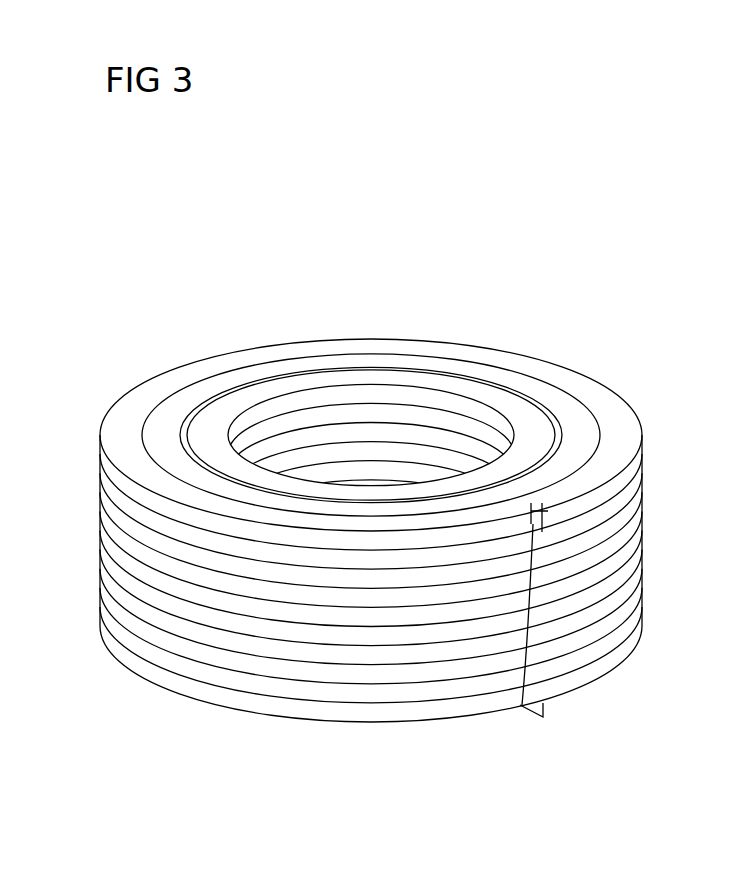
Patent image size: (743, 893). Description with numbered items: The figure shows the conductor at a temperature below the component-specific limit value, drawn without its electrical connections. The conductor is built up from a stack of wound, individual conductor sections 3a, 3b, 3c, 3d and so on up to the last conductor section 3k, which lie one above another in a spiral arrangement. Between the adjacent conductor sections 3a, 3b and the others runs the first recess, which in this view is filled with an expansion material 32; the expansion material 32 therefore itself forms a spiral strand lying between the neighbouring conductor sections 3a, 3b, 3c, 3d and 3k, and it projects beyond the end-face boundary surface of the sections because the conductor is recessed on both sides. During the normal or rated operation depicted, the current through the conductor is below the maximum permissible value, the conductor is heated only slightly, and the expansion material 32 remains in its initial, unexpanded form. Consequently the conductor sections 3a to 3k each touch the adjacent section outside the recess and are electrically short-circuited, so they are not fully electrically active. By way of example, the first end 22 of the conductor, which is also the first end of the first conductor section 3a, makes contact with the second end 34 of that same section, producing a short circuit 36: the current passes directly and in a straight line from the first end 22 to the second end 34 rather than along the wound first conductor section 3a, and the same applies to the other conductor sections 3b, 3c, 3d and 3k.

The first conductor section 3a is at (636, 445).
The conductor section 3b is at (636, 498).
The conductor section 3c is at (632, 522).
The conductor section 3d is at (632, 540).
The conductor section 3k is at (636, 648).
The expansion material 32 is at (366, 357).
The first end 22 is at (531, 523).
The second end 34 is at (568, 532).
The short circuit 36 is at (522, 705).